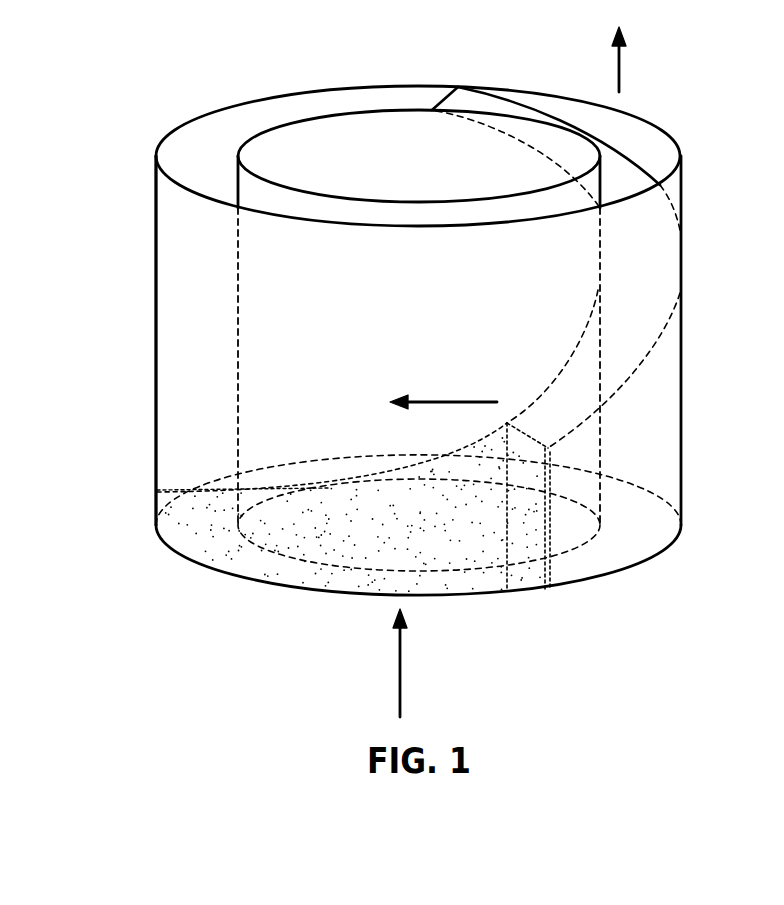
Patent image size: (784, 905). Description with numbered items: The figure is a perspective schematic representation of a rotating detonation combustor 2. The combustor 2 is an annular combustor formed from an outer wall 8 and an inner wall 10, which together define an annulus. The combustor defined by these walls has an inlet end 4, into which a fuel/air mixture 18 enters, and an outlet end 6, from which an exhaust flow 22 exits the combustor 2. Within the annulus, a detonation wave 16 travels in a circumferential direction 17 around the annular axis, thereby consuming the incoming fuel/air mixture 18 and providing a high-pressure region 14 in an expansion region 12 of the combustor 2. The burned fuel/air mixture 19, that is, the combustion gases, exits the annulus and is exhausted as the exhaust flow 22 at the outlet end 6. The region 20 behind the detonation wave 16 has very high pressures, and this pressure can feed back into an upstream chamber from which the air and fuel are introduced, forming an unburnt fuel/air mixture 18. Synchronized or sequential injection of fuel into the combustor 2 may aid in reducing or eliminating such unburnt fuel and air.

The rotating detonation combustor 2 is at (420, 368).
The inlet end 4 is at (465, 650).
The outlet end 6 is at (318, 73).
The outer wall 8 is at (154, 192).
The inner wall 10 is at (432, 197).
The expansion region 12 is at (684, 336).
The high-pressure region 14 is at (626, 523).
The detonation wave 16 is at (572, 585).
The circumferential direction 17 is at (443, 402).
The fuel/air mixture 18 is at (405, 660).
The burned fuel/air mixture 19 is at (170, 326).
The region behind the detonation wave 20 is at (302, 582).
The exhaust flow 22 is at (623, 63).